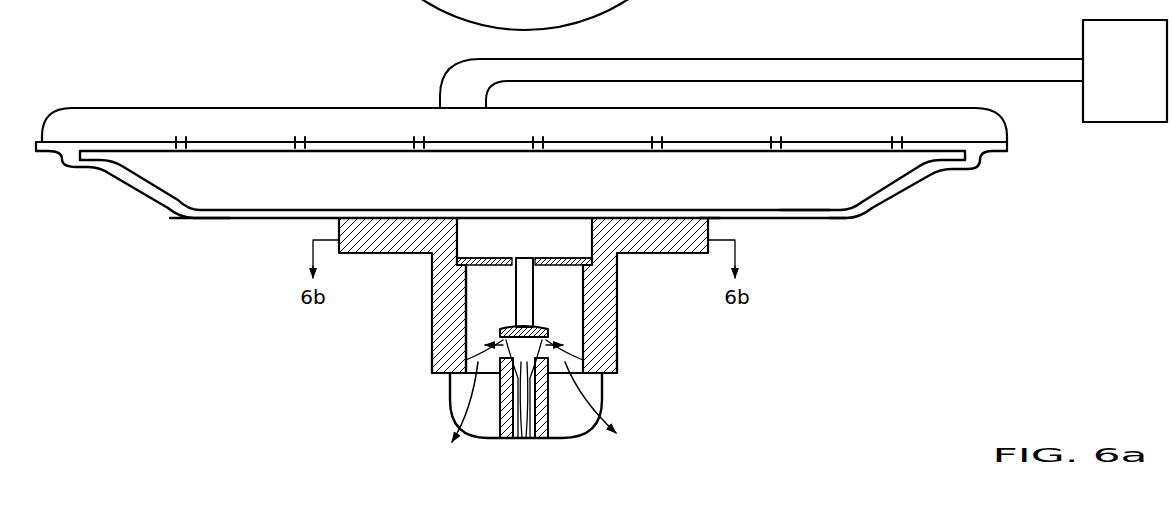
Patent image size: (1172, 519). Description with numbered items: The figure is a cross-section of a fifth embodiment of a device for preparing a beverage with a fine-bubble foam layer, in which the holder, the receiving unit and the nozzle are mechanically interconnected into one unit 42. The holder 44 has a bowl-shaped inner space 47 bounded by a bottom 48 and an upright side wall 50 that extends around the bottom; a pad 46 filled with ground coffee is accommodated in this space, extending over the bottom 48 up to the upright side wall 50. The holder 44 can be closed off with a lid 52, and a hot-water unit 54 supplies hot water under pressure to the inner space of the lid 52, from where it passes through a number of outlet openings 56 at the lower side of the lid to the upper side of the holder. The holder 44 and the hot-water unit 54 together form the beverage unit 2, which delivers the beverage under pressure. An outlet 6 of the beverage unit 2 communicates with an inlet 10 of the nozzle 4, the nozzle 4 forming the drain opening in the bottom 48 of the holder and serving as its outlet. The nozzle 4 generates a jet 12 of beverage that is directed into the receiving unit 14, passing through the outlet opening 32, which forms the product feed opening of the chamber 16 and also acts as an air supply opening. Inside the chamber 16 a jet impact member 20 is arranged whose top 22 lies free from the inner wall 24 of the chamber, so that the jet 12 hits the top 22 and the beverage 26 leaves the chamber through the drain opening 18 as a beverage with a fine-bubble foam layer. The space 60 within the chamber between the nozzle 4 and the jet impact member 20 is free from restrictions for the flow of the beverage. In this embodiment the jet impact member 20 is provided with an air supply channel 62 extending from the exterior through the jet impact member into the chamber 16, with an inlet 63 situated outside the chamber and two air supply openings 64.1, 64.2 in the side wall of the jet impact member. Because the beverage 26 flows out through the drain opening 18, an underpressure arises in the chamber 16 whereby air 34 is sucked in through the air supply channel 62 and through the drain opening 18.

The beverage unit 2 is at (995, 236).
The nozzle 4 is at (466, 272).
The outlet 6 is at (533, 228).
The inlet 10 is at (520, 258).
The jet 12 is at (502, 326).
The receiving unit 14 is at (683, 345).
The chamber 16 is at (572, 322).
The drain opening 18 is at (468, 375).
The jet impact member 20 is at (588, 346).
The top 22 is at (538, 326).
The inner wall 24 is at (473, 282).
The beverage 26 is at (455, 430).
The outlet opening 32 is at (516, 265).
The air 34 is at (517, 440).
The unit 42 is at (820, 303).
The holder 44 is at (848, 222).
The pad 46 is at (797, 203).
The bowl-shaped inner space 47 is at (140, 197).
The bottom 48 is at (200, 219).
The upright side wall 50 is at (115, 177).
The lid 52 is at (962, 118).
The hot-water unit 54 is at (1083, 42).
The outlet openings 56 is at (183, 140).
The space 60 is at (557, 260).
The air supply channel 62 is at (533, 398).
The inlet 63 is at (523, 442).
The air supply opening 64.1 is at (435, 360).
The air supply opening 64.2 is at (612, 360).